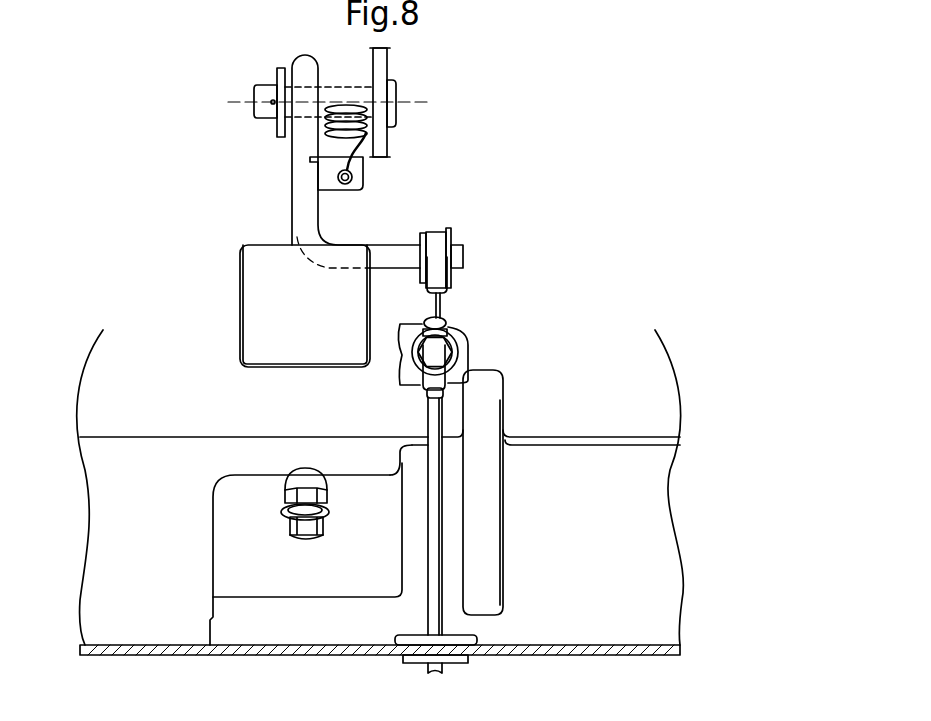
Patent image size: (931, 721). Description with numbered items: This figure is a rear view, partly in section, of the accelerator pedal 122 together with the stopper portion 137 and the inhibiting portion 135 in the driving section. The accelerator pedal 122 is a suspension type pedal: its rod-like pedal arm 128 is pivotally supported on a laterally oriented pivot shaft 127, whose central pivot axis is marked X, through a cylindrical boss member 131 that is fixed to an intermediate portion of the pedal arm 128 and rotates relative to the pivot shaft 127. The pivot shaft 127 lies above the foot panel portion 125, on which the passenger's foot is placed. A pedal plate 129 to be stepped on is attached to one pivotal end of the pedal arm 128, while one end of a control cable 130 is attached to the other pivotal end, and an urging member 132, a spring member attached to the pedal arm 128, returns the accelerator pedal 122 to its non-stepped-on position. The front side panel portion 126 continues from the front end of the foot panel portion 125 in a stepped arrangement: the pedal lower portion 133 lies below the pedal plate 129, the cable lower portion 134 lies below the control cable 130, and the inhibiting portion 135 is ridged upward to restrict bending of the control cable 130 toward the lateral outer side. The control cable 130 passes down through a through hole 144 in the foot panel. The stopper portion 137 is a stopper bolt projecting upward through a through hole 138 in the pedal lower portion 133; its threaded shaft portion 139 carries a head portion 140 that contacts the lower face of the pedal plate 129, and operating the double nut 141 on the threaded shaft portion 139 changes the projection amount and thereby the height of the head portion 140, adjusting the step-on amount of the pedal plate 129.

The accelerator pedal 122 is at (298, 207).
The foot panel portion 125 is at (642, 644).
The front side panel portion 126 is at (622, 436).
The pivot shaft 127 is at (263, 90).
The pedal arm 128 is at (297, 180).
The pedal plate 129 is at (246, 300).
The control cable 130 is at (433, 418).
The cylindrical boss member 131 is at (360, 83).
The urging member 132 is at (360, 147).
The pedal lower portion 133 is at (233, 568).
The cable lower portion 134 is at (417, 548).
The inhibiting portion 135 is at (487, 390).
The stopper portion 137 is at (292, 496).
The through hole 138 is at (310, 537).
The threaded shaft portion 139 is at (320, 517).
The head portion 140 is at (310, 473).
The double nut 141 is at (318, 530).
The through hole 144 is at (460, 640).